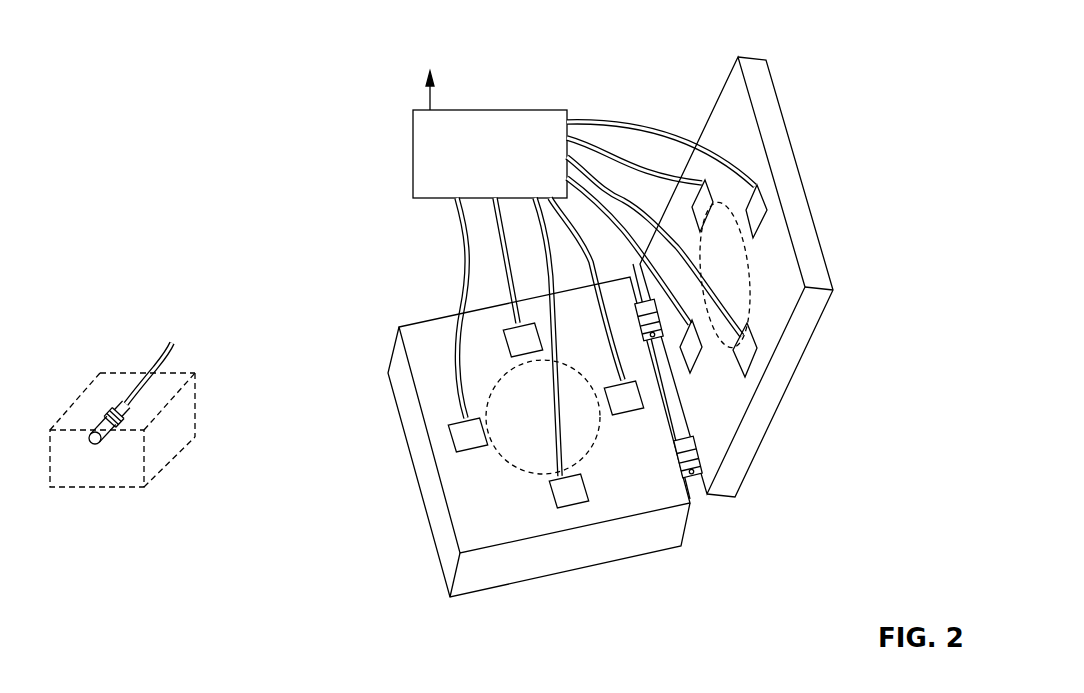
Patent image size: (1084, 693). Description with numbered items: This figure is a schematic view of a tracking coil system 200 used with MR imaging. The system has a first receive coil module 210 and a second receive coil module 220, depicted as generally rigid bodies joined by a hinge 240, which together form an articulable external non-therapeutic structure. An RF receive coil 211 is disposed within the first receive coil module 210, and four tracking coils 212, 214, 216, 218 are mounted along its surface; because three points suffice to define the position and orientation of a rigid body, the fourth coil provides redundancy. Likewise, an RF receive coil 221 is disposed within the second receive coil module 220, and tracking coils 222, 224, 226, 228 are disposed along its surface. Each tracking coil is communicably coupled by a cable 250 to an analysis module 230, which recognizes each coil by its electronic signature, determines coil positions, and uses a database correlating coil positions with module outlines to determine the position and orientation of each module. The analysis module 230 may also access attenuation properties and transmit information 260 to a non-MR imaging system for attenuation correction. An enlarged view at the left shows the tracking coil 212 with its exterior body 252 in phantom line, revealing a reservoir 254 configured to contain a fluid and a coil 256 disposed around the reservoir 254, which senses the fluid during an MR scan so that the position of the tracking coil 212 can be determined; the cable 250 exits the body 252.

The tracking coil system 200 is at (186, 58).
The first receive coil module 210 is at (498, 566).
The RF receive coil 211 is at (515, 462).
The tracking coil 212 is at (450, 438).
The tracking coil 214 is at (503, 342).
The tracking coil 216 is at (628, 415).
The tracking coil 218 is at (575, 514).
The second receive coil module 220 is at (749, 438).
The RF receive coil 221 is at (748, 258).
The tracking coil 222 is at (758, 186).
The tracking coil 224 is at (705, 180).
The tracking coil 226 is at (703, 352).
The tracking coil 228 is at (752, 332).
The analysis module 230 is at (500, 110).
The hinge 240 is at (700, 498).
The cable 250 is at (618, 122).
The body 252 is at (178, 447).
The reservoir 254 is at (93, 443).
The coil 256 is at (115, 405).
The information 260 is at (428, 97).